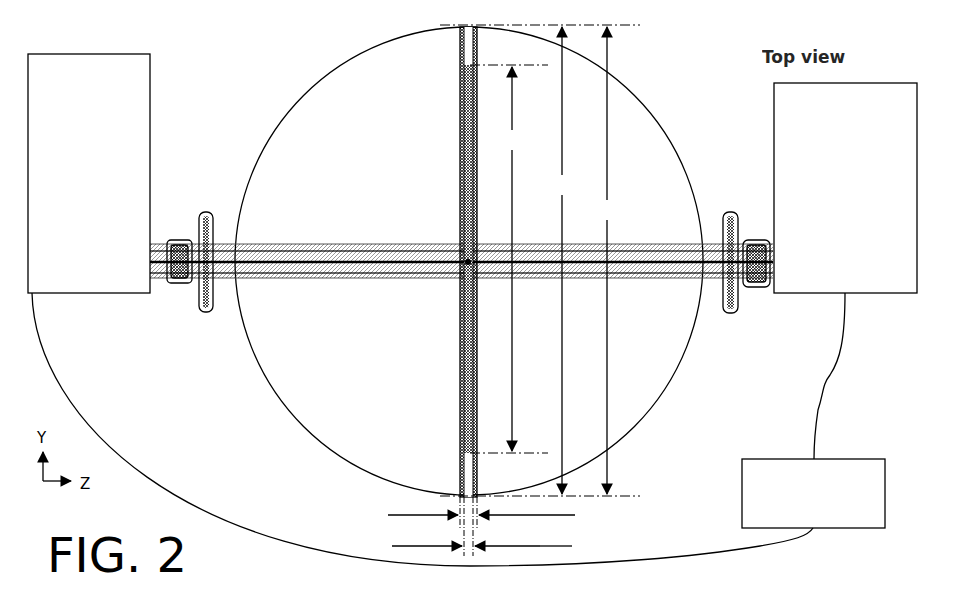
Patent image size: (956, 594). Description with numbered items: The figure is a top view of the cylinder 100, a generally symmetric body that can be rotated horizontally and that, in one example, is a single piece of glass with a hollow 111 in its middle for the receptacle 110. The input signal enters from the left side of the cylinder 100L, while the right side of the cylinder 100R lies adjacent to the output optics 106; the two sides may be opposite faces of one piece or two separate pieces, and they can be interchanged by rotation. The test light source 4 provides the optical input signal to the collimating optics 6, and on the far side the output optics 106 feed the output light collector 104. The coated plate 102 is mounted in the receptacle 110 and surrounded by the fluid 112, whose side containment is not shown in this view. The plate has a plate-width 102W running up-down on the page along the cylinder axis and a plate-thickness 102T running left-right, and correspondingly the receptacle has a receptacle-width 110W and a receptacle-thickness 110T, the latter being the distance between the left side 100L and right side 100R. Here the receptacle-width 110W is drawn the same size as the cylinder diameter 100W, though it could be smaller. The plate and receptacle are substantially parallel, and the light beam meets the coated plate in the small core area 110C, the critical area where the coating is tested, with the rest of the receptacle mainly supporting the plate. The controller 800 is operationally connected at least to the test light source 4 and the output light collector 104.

The test light source 4 is at (110, 173).
The collimating optics 6 is at (203, 197).
The cylinder 100 is at (224, 357).
The left side of the cylinder 100L is at (461, 276).
The right side of the cylinder 100R is at (650, 280).
The cylinder diameter 100W is at (607, 260).
The coated plate 102 is at (465, 333).
The plate-width 102W is at (512, 259).
The plate-thickness 102T is at (482, 546).
The output light collector 104 is at (830, 188).
The output optics 106 is at (733, 192).
The receptacle 110 is at (467, 25).
The receptacle-width 110W is at (562, 260).
The receptacle-thickness 110T is at (481, 515).
The core area 110C is at (450, 292).
The hollow 111 is at (462, 40).
The fluid 112 is at (470, 50).
The controller 800 is at (813, 493).